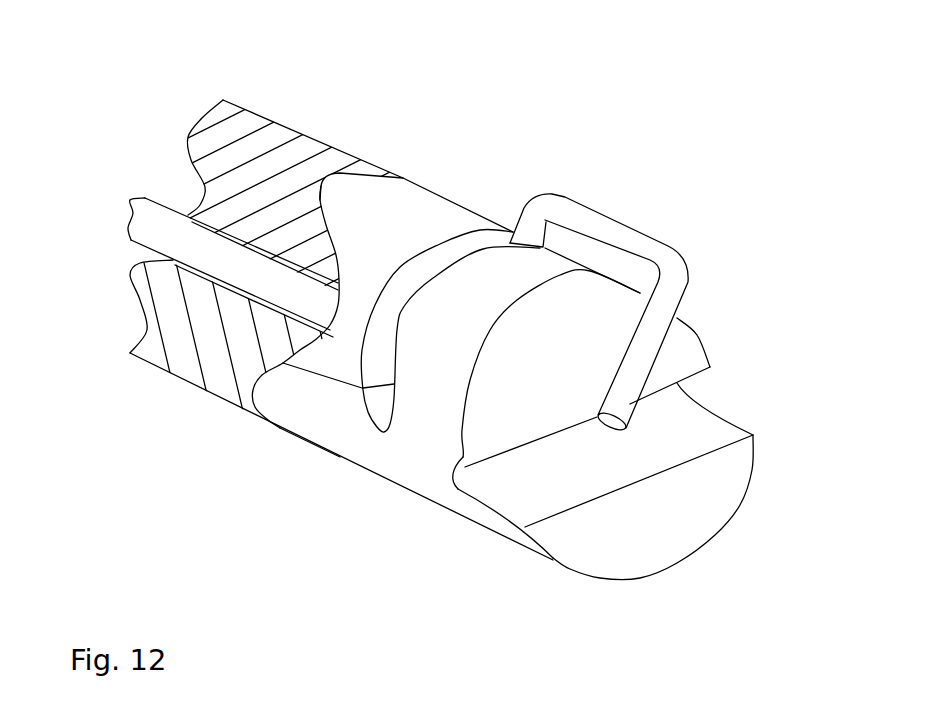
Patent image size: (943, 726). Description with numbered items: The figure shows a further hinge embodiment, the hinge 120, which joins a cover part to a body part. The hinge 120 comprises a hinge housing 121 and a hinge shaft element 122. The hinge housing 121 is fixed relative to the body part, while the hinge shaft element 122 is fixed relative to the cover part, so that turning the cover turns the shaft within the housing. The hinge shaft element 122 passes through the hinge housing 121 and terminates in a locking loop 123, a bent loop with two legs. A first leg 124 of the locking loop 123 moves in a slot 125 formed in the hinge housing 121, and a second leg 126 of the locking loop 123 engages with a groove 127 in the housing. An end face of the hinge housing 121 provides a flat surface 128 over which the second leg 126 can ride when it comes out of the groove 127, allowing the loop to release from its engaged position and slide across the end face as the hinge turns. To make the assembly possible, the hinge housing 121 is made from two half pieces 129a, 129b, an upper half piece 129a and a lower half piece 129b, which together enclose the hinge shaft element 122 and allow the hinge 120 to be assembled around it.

The hinge 120 is at (543, 103).
The hinge housing 121 is at (402, 177).
The hinge shaft element 122 is at (133, 236).
The locking loop 123 is at (622, 220).
The first leg 124 is at (514, 231).
The slot 125 is at (367, 375).
The second leg 126 is at (657, 359).
The groove 127 is at (460, 486).
The flat surface 128 is at (569, 387).
The half piece 129a is at (417, 231).
The half piece 129b is at (450, 462).